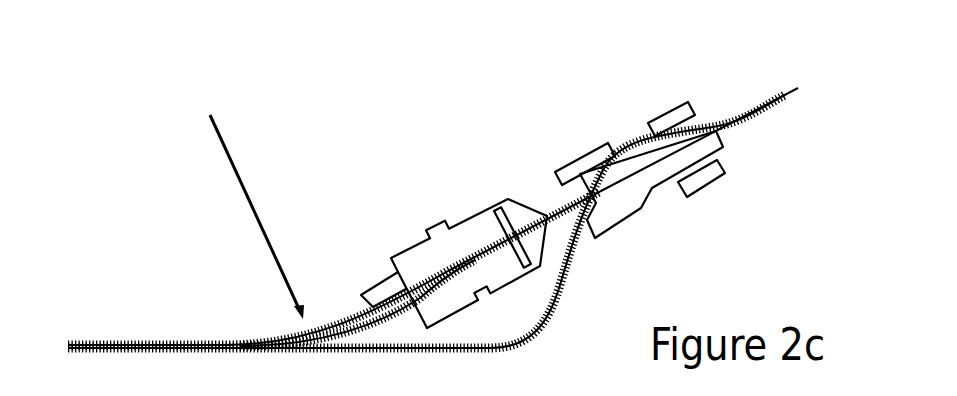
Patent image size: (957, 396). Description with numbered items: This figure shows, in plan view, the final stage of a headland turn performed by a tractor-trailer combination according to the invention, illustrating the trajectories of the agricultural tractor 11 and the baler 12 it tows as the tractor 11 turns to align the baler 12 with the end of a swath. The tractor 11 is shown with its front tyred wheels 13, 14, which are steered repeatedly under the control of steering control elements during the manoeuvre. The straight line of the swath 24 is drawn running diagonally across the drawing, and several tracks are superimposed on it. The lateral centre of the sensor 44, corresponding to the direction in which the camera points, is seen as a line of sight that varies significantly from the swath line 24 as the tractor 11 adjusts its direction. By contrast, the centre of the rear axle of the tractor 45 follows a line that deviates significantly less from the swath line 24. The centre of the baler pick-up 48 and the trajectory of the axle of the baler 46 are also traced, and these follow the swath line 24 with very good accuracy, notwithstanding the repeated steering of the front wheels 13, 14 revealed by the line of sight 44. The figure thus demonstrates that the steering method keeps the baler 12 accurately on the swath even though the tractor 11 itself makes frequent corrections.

The agricultural tractor 11 is at (633, 140).
The baler 12 is at (440, 227).
The front left tyred wheel 13 is at (678, 117).
The front right tyred wheel 14 is at (700, 182).
The line of the swath 24 is at (775, 97).
The lateral centre of the sensor 44 is at (741, 124).
The centre of the rear axle of the tractor 45 is at (547, 212).
The trajectory of the axle of the baler 46 is at (375, 303).
The centre of the baler pick-up 48 is at (513, 227).